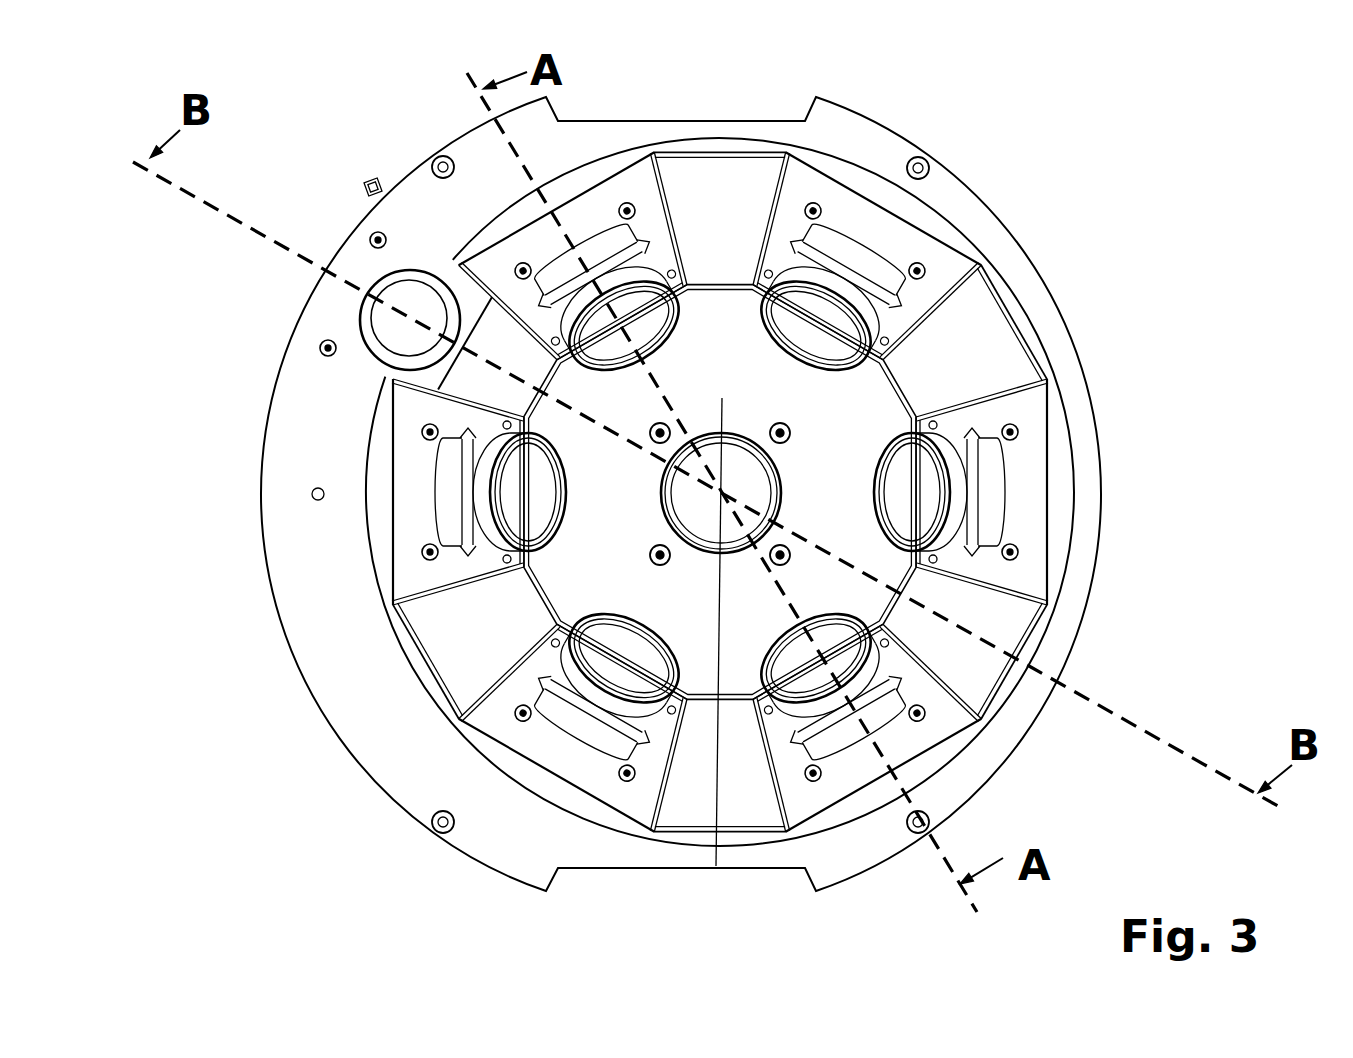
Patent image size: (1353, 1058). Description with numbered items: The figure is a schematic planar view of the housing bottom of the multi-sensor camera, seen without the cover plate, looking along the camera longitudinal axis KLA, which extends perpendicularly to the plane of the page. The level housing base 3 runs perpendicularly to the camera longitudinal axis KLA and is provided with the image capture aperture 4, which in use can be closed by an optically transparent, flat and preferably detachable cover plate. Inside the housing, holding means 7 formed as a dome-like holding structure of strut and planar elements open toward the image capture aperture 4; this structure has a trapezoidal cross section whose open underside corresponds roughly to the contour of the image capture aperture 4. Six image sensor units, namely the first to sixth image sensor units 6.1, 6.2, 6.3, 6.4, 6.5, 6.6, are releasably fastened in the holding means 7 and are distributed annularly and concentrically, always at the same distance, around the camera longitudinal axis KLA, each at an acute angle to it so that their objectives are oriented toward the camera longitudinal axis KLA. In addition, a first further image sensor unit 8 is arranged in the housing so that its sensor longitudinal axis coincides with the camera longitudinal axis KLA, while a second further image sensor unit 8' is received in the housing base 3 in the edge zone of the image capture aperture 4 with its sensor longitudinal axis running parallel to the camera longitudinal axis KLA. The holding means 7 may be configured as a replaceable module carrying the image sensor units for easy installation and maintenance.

The housing base 3 is at (328, 428).
The image capture aperture 4 is at (432, 597).
The first image sensor unit 6.1 is at (455, 523).
The second image sensor unit 6.2 is at (575, 268).
The third image sensor unit 6.3 is at (862, 262).
The fourth image sensor unit 6.4 is at (983, 470).
The fifth image sensor unit 6.5 is at (847, 727).
The sixth image sensor unit 6.6 is at (588, 723).
The holding means 7 is at (860, 410).
The first further image sensor unit 8 is at (721, 457).
The second further image sensor unit 8' is at (377, 255).
The camera longitudinal axis KLA is at (708, 662).